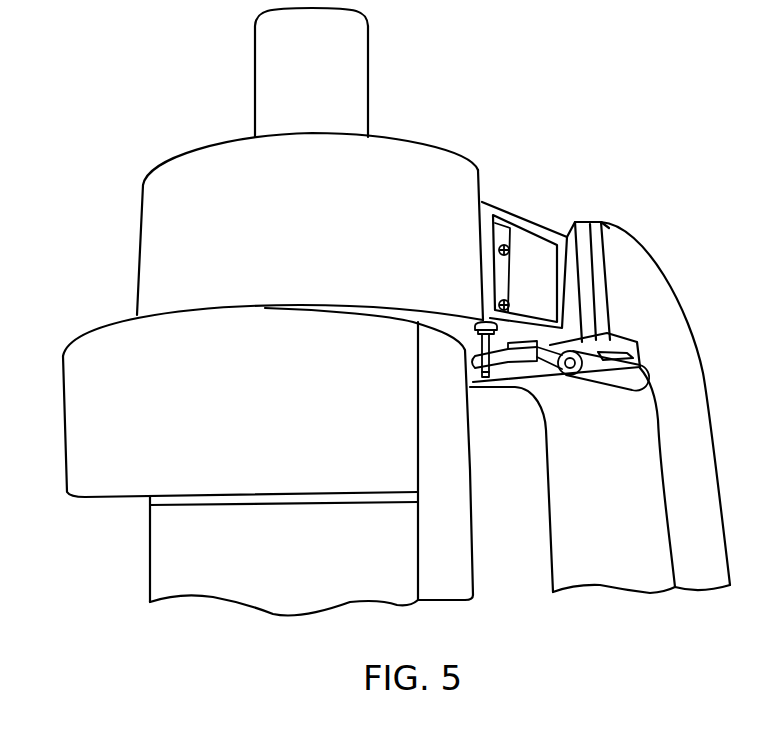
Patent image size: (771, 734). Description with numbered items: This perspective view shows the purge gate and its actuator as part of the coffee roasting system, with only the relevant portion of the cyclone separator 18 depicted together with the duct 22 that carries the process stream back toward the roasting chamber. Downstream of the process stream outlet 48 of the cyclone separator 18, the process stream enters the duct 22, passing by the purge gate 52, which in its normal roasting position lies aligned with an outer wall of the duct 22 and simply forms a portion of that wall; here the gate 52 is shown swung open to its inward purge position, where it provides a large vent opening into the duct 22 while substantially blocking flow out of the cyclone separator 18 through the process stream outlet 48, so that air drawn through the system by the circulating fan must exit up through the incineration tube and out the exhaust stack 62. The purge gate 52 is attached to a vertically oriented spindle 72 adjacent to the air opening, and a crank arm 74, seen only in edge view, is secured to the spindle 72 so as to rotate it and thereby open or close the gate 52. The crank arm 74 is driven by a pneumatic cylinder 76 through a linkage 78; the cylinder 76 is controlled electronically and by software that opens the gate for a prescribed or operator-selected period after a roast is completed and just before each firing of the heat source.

The cyclone separator 18 is at (432, 132).
The duct 22 is at (623, 223).
The process stream outlet 48 is at (500, 203).
The purge gate 52 is at (505, 270).
The exhaust stack 62 is at (277, 40).
The spindle 72 is at (487, 380).
The crank arm 74 is at (498, 370).
The pneumatic cylinder 76 is at (608, 373).
The linkage 78 is at (547, 363).